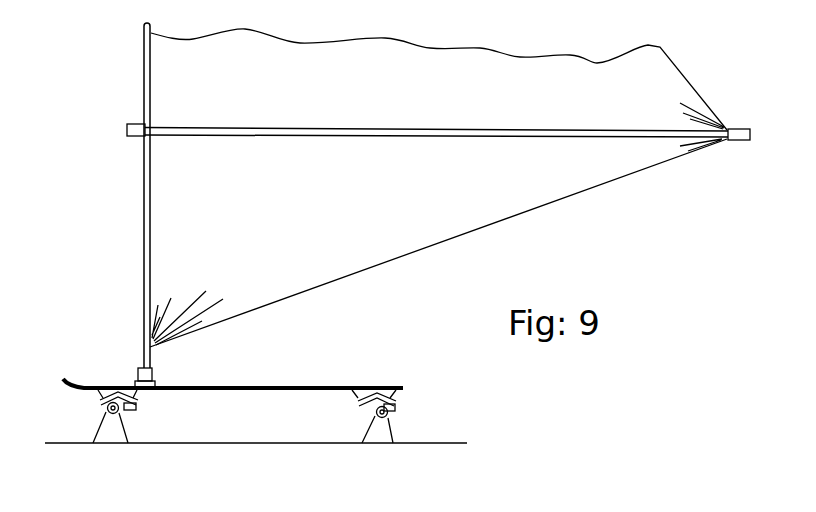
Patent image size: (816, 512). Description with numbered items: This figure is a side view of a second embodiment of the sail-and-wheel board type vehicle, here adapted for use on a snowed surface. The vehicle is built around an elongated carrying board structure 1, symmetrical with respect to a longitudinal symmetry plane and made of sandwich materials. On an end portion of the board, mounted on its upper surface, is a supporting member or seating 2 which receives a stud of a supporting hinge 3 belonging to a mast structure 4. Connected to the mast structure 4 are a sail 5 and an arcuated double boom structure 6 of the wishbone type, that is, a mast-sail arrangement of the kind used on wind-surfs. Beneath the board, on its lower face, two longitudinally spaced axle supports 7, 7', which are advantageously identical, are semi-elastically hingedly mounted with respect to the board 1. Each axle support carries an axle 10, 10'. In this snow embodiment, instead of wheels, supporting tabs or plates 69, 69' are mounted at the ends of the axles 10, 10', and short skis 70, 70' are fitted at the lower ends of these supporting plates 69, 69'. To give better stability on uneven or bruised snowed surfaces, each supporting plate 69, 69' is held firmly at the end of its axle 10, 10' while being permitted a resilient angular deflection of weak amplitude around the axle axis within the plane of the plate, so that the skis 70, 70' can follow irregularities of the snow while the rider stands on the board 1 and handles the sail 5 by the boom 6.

The carrying board structure 1 is at (278, 384).
The supporting member or seating 2 is at (154, 385).
The supporting hinge 3 is at (138, 378).
The mast structure 4 is at (144, 78).
The sail 5 is at (663, 80).
The arcuated double boom structure 6 is at (313, 137).
The axle support 7 is at (147, 406).
The axle support 7' is at (412, 397).
The axle 10 is at (75, 407).
The axle 10' is at (358, 420).
The supporting tab or plate 69 is at (148, 427).
The supporting tab or plate 69' is at (429, 429).
The short ski 70 is at (147, 463).
The short ski 70' is at (358, 465).